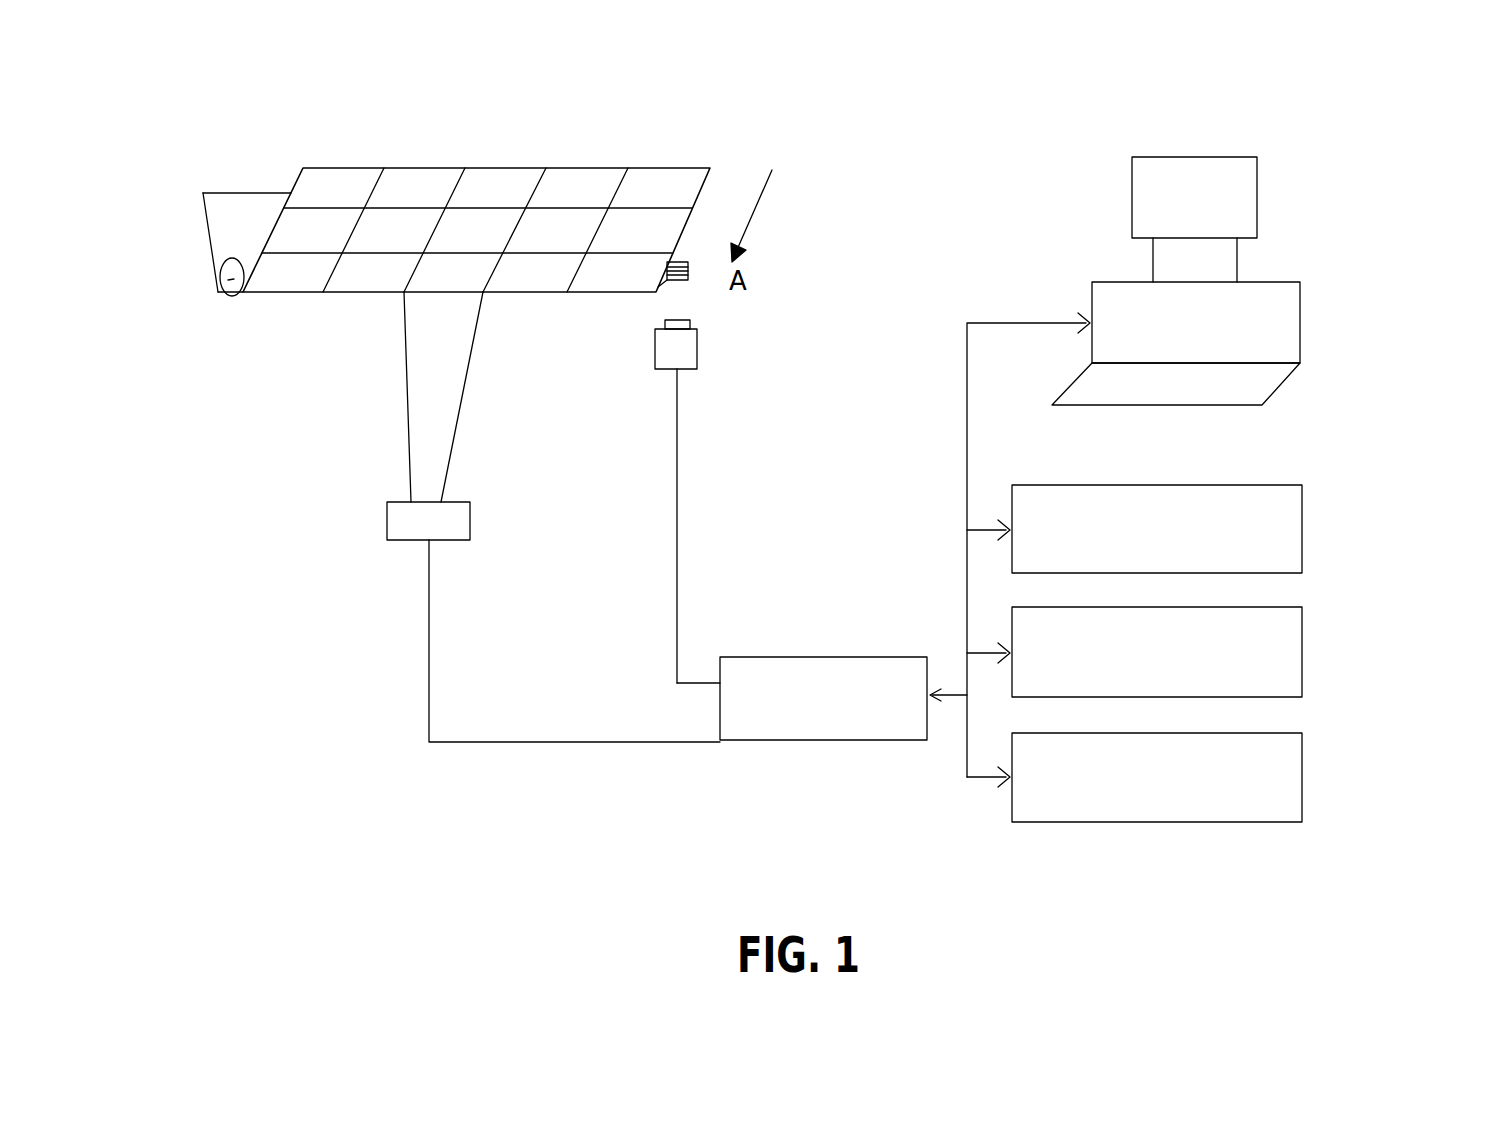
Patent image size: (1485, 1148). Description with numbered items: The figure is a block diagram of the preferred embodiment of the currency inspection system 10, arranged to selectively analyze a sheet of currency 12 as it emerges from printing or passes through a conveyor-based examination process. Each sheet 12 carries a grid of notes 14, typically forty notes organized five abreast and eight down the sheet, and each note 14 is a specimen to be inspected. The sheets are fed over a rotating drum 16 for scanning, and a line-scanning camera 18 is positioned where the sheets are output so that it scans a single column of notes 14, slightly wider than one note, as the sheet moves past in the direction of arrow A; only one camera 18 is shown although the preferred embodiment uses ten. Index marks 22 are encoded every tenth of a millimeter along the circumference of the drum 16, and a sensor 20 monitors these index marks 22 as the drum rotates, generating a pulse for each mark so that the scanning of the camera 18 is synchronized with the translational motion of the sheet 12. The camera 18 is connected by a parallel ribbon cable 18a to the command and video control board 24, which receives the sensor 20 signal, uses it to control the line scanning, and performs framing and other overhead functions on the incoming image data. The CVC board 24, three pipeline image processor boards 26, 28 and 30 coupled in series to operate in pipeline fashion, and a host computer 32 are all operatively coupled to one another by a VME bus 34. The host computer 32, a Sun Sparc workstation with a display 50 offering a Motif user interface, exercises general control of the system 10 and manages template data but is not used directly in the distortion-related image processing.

The system 10 is at (1325, 432).
The sheet of currency 12 is at (626, 160).
The notes 14 is at (577, 183).
The rotating drum 16 is at (213, 287).
The line-scanning camera 18 is at (470, 517).
The ribbon cable 18a is at (484, 742).
The sensor 20 is at (705, 352).
The index mark 22 is at (690, 282).
The command and video control board 24 is at (785, 657).
The first pipeline image processor board 26 is at (1307, 518).
The second pipeline image processor board 28 is at (1307, 633).
The third pipeline image processor board 30 is at (1310, 752).
The host computer 32 is at (1303, 350).
The VME bus 34 is at (967, 456).
The display 50 is at (1217, 188).